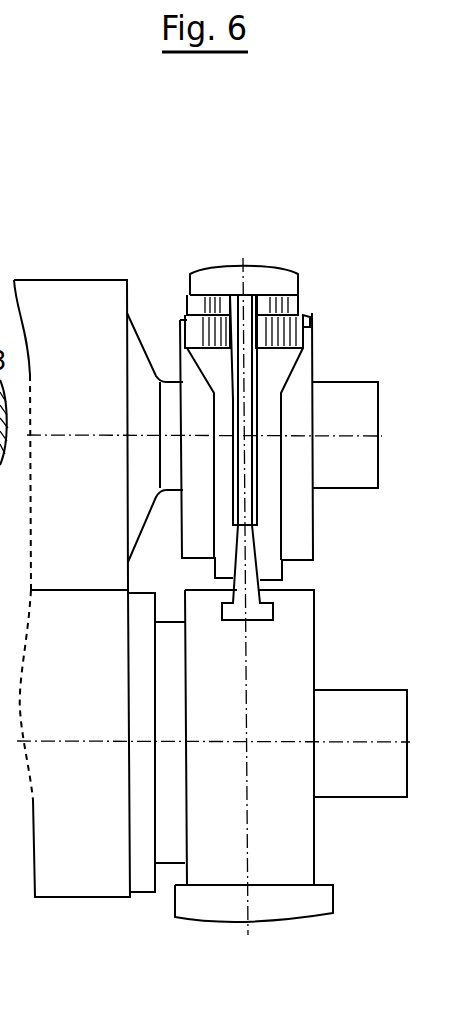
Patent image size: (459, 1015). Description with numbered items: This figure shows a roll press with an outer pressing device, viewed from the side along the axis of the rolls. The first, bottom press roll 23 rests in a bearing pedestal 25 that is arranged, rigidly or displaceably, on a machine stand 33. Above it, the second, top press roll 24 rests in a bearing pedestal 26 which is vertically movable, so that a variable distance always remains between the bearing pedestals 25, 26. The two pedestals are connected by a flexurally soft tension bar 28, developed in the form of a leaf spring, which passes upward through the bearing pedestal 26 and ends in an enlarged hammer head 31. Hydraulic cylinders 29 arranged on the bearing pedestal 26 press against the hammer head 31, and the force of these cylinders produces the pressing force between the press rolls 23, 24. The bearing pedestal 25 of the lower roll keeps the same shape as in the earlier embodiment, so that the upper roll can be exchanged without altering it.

The first, bottom press roll 23 is at (85, 885).
The second, top press roll 24 is at (68, 298).
The bearing pedestal 25 is at (295, 838).
The bearing pedestal 26 is at (265, 545).
The tension bar 28 is at (255, 500).
The hydraulic cylinder 29 is at (190, 318).
The hammer head 31 is at (276, 270).
The machine stand 33 is at (278, 910).